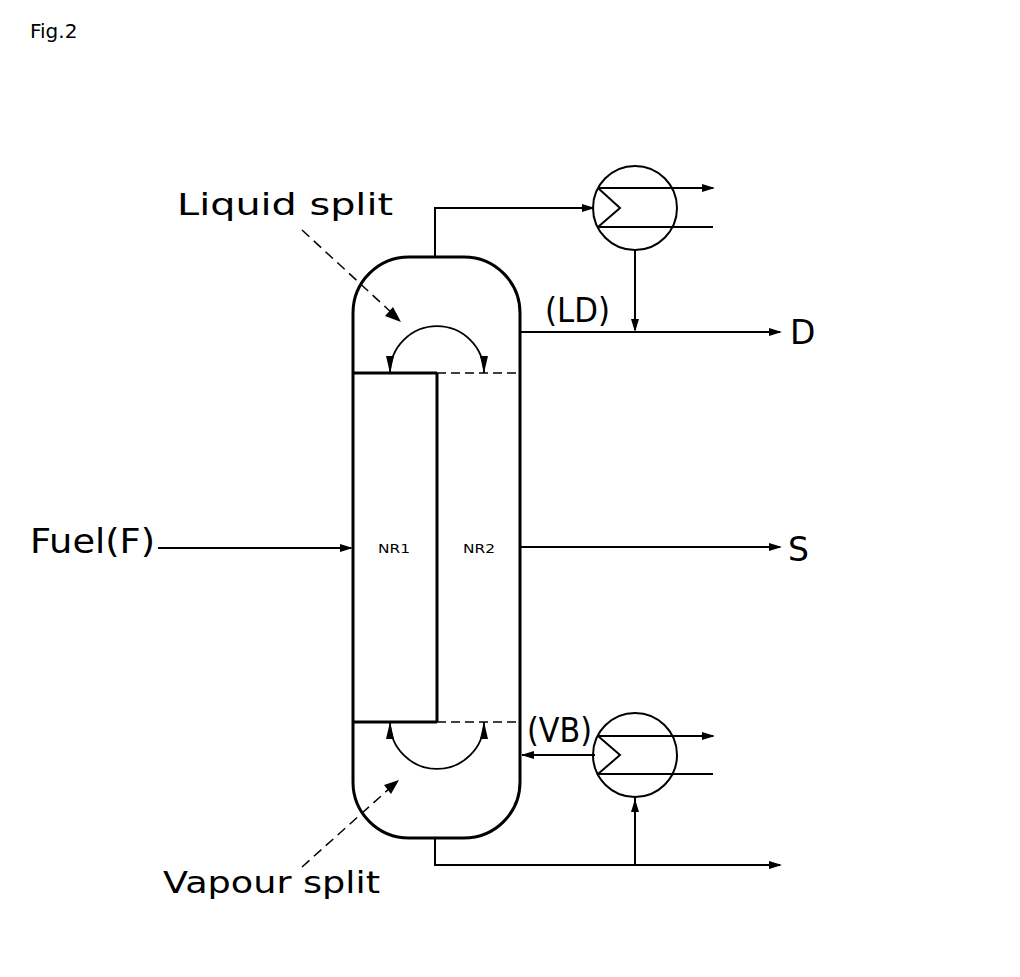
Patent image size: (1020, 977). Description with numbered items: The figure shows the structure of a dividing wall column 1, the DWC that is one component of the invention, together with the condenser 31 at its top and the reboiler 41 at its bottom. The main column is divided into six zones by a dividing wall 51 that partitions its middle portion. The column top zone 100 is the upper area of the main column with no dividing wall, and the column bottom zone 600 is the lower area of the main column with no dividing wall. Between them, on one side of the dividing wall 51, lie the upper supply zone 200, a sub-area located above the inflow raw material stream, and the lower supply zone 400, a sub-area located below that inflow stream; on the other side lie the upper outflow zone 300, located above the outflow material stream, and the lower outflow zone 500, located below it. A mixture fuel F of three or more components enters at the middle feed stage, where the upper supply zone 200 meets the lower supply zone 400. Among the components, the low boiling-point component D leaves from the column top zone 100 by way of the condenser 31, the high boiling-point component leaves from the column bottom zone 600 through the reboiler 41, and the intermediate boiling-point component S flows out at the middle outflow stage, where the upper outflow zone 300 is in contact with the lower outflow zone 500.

The dividing wall column 1 is at (326, 402).
The condenser 31 is at (635, 166).
The reboiler 41 is at (635, 713).
The dividing wall 51 is at (445, 432).
The column top zone 100 is at (436, 322).
The upper supply zone 200 is at (395, 460).
The upper outflow zone 300 is at (478, 460).
The lower supply zone 400 is at (395, 635).
The lower outflow zone 500 is at (478, 635).
The column bottom zone 600 is at (436, 774).